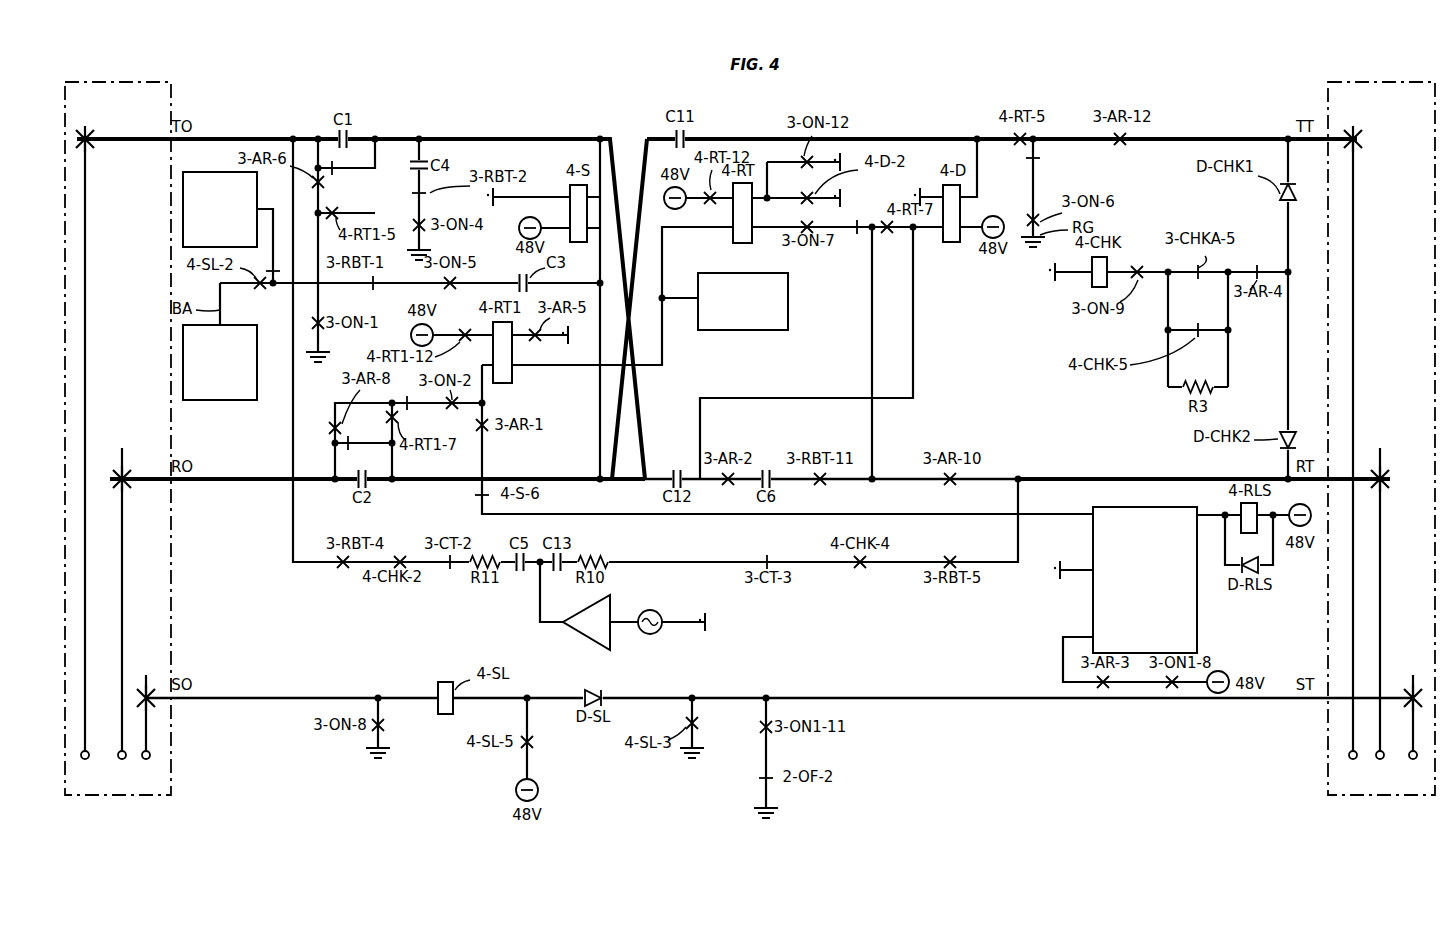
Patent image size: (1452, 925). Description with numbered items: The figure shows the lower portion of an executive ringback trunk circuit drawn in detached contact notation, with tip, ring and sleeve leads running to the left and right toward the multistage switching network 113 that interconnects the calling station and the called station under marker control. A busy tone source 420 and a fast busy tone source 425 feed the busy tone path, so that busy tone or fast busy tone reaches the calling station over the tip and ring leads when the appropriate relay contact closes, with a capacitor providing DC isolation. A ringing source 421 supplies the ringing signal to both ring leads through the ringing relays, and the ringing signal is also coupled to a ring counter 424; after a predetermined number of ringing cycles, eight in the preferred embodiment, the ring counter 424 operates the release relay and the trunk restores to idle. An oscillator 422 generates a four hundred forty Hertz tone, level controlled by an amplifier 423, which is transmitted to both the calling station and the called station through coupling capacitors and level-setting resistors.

The multistage switching network 113 is at (171, 93).
The busy tone source 420 is at (226, 402).
The ringing source 421 is at (788, 300).
The oscillator 422 is at (654, 634).
The amplifier 423 is at (577, 634).
The ring counter 424 is at (1090, 507).
The fast busy tone source 425 is at (210, 172).